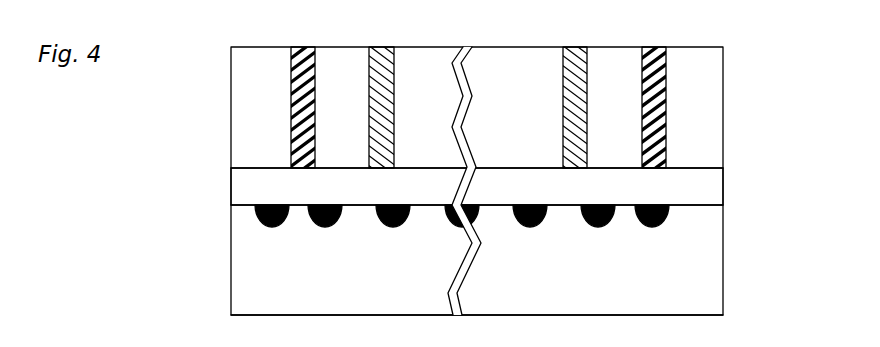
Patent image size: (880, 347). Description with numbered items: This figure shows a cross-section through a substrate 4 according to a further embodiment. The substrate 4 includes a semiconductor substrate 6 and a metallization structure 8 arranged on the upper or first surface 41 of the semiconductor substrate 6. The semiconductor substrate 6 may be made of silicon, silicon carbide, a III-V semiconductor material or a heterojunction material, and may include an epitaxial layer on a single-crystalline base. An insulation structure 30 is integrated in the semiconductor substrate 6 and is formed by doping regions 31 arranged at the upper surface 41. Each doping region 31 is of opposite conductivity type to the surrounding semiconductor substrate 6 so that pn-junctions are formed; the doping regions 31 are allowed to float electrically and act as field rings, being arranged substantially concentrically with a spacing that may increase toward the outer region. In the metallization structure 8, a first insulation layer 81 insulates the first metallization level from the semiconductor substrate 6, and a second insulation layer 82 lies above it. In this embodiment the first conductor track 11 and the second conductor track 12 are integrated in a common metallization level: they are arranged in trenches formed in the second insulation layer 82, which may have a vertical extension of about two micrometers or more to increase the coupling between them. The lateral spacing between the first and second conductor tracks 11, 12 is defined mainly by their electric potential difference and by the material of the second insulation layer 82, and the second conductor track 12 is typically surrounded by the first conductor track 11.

The substrate 4 is at (747, 53).
The semiconductor substrate 6 is at (238, 297).
The metallization structure 8 is at (212, 45).
The first conductor track 11 is at (298, 105).
The second conductor track 12 is at (379, 143).
The insulation structure 30 is at (245, 222).
The doping region 31 is at (272, 228).
The first surface 41 is at (706, 205).
The first insulation layer 81 is at (238, 192).
The second insulation layer 82 is at (508, 68).